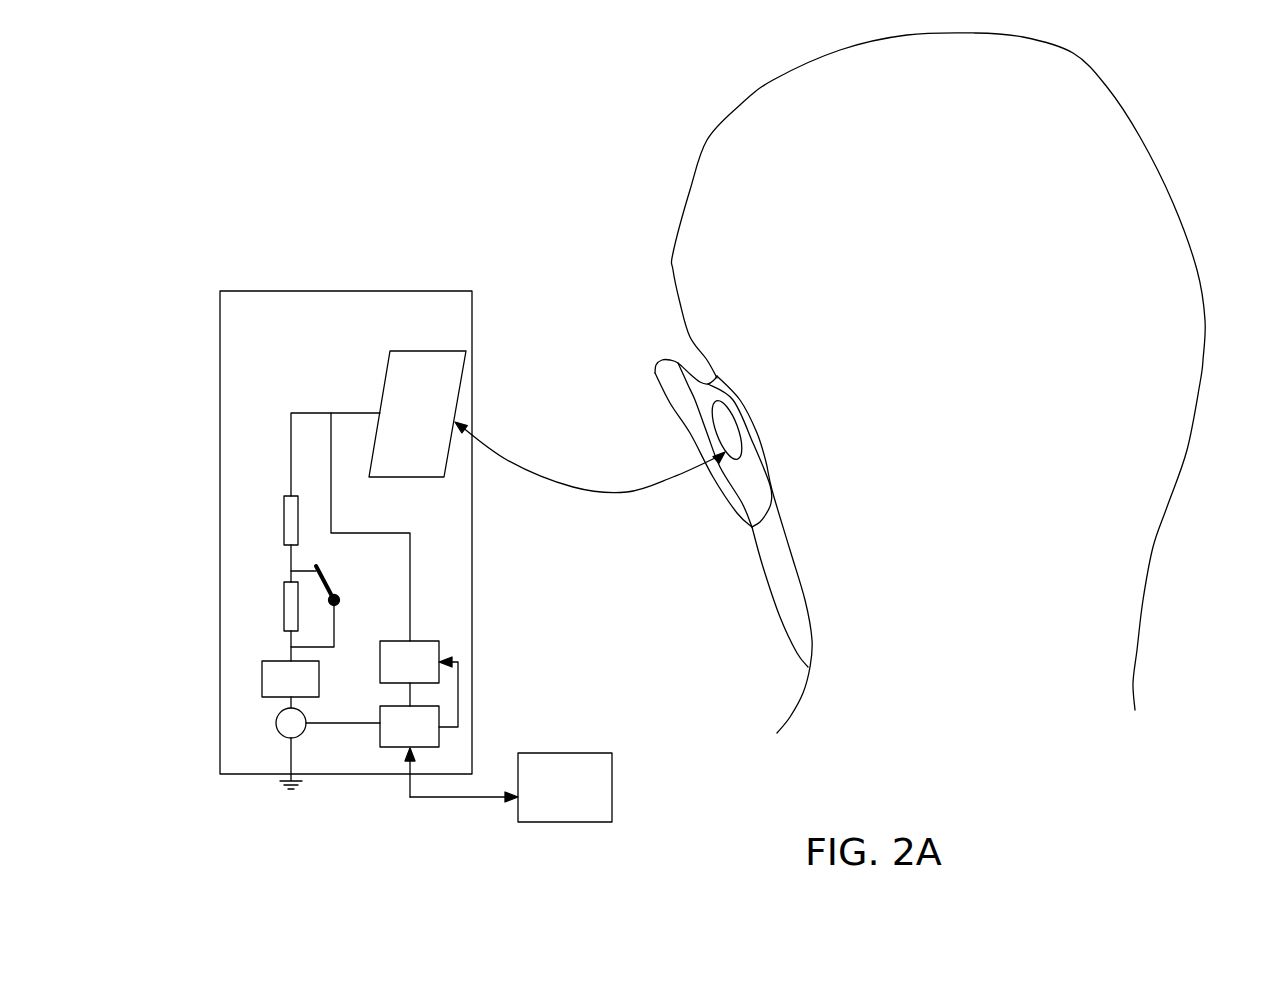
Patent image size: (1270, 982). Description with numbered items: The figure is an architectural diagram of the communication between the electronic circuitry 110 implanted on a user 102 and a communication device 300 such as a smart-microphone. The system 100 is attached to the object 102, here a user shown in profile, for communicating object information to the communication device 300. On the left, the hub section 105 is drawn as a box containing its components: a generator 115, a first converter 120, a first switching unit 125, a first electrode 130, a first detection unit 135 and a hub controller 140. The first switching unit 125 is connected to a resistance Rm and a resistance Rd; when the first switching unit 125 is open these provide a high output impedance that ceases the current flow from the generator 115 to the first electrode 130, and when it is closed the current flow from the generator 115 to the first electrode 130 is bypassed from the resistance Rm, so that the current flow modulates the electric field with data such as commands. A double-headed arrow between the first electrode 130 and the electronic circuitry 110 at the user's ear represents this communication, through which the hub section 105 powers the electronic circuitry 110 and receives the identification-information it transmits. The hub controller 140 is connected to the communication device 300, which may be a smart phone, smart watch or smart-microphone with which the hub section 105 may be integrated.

The system 100 is at (464, 90).
The object 102 is at (1153, 547).
The hub section 105 is at (256, 476).
The electronic circuitry 110 is at (725, 425).
The generator 115 is at (276, 723).
The first converter 120 is at (262, 677).
The first switching unit 125 is at (340, 600).
The first electrode 130 is at (385, 395).
The first detection unit 135 is at (439, 672).
The hub controller 140 is at (392, 747).
The communication device 300 is at (612, 775).